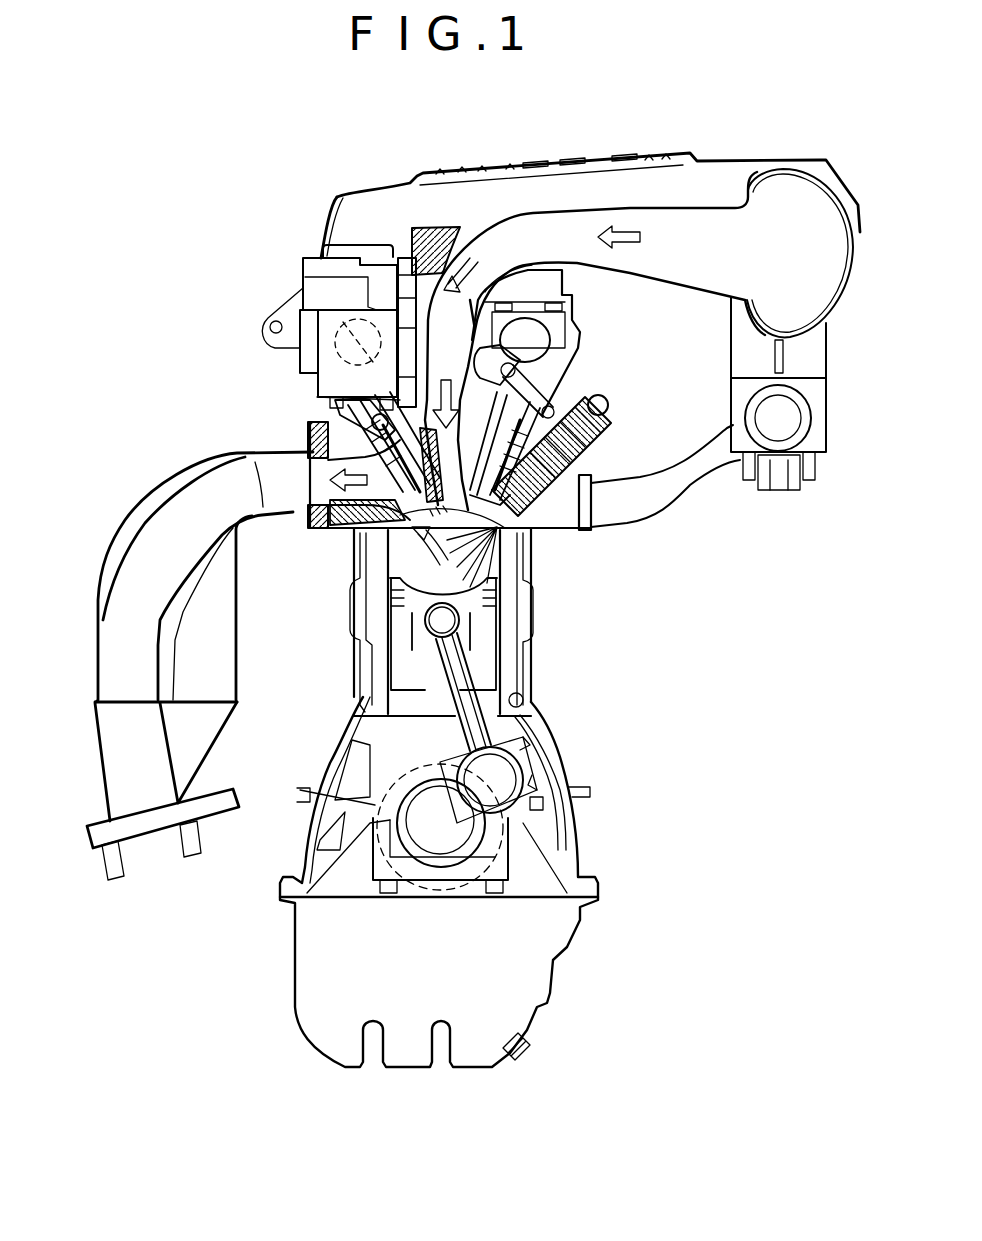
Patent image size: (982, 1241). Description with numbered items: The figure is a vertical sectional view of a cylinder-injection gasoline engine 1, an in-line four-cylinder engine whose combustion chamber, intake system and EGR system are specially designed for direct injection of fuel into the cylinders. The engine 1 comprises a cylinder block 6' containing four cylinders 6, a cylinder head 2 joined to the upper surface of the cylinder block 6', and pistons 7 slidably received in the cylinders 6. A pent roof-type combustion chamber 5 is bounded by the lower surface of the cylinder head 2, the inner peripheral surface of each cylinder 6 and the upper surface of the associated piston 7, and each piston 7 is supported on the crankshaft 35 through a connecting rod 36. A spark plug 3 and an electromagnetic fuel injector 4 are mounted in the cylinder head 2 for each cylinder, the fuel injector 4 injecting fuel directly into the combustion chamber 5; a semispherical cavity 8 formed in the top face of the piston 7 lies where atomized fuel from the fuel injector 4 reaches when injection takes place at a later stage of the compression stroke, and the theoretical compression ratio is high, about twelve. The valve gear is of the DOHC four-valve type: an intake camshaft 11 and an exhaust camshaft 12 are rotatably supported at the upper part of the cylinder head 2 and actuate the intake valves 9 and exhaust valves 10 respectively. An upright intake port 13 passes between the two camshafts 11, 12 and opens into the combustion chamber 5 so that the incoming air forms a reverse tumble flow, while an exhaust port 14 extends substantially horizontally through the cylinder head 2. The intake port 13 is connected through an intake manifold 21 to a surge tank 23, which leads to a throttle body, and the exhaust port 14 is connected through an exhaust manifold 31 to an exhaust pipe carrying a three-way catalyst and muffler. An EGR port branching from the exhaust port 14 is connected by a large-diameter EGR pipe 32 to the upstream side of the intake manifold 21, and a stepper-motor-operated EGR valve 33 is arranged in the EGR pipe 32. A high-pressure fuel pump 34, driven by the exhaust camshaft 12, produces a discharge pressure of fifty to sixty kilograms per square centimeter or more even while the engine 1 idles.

The engine 1 is at (620, 628).
The cylinder head 2 is at (575, 365).
The spark plug 3 is at (390, 407).
The electromagnetic fuel injector 4 is at (548, 520).
The combustion chamber 5 is at (368, 557).
The cylinder 6 is at (472, 622).
The cylinder block 6' is at (394, 622).
The piston 7 is at (390, 588).
The semispherical cavity 8 is at (520, 578).
The intake valve 9 is at (562, 398).
The exhaust valve 10 is at (318, 447).
The intake camshaft 11 is at (538, 325).
The exhaust camshaft 12 is at (355, 335).
The upright intake port 13 is at (437, 330).
The exhaust port 14 is at (323, 492).
The intake manifold 21 is at (602, 210).
The surge tank 23 is at (789, 160).
The exhaust manifold 31 is at (145, 572).
The EGR pipe 32 is at (672, 490).
The EGR valve 33 is at (818, 438).
The high-pressure fuel pump 34 is at (325, 318).
The crankshaft 35 is at (445, 843).
The connecting rod 36 is at (540, 698).